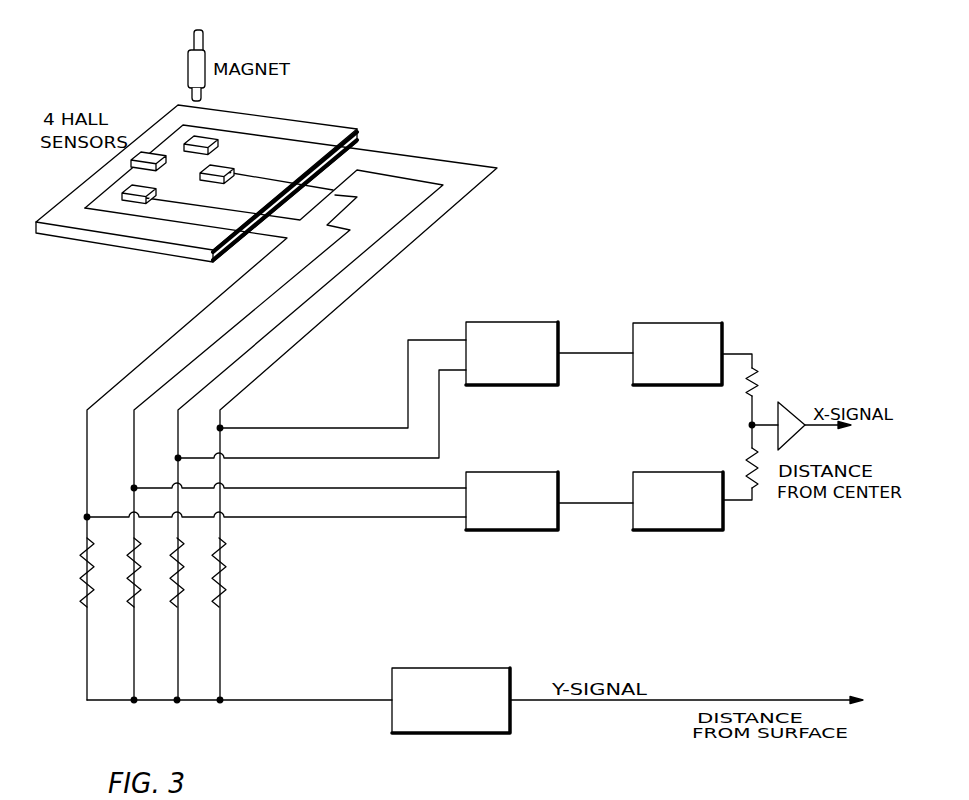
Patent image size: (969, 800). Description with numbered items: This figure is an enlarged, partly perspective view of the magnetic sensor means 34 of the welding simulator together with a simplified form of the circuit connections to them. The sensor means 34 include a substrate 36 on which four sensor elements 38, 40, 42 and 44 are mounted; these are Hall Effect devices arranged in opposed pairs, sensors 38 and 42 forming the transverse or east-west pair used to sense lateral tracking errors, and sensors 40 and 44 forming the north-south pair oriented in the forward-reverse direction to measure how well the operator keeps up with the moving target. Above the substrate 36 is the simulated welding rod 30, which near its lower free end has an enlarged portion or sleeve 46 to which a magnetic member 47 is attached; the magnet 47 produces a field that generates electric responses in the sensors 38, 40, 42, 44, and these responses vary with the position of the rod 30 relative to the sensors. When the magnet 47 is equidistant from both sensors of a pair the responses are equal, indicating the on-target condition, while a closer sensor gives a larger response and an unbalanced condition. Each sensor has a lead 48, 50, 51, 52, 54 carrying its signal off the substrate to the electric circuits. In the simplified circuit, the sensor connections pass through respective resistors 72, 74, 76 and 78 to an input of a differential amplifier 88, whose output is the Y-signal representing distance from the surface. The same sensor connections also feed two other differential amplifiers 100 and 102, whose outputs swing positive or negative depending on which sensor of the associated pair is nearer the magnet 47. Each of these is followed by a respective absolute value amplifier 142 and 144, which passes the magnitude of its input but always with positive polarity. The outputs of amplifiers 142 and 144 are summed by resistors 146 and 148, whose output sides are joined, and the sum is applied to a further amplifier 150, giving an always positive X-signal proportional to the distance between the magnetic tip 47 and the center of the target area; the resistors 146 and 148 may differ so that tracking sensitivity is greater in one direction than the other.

The simulated welding rod 30 is at (205, 35).
The sensor means 34 is at (297, 106).
The substrate 36 is at (324, 131).
The sensor element 38 is at (199, 141).
The sensor element 40 is at (152, 154).
The sensor element 42 is at (150, 187).
The sensor element 44 is at (225, 166).
The sleeve 46 is at (188, 67).
The magnetic member 47 is at (201, 94).
The lead 48 is at (362, 148).
The lead 50 is at (231, 286).
The lead 51 is at (250, 312).
The lead 52 is at (393, 177).
The lead 54 is at (262, 178).
The resistor 72 is at (82, 560).
The resistor 74 is at (127, 598).
The resistor 76 is at (170, 592).
The resistor 78 is at (212, 596).
The differential amplifier 88 is at (483, 728).
The differential amplifier 100 is at (518, 332).
The differential amplifier 102 is at (501, 531).
The absolute value amplifier 142 is at (688, 327).
The absolute value amplifier 144 is at (681, 531).
The resistor 146 is at (758, 388).
The resistor 148 is at (738, 457).
The amplifier 150 is at (796, 403).